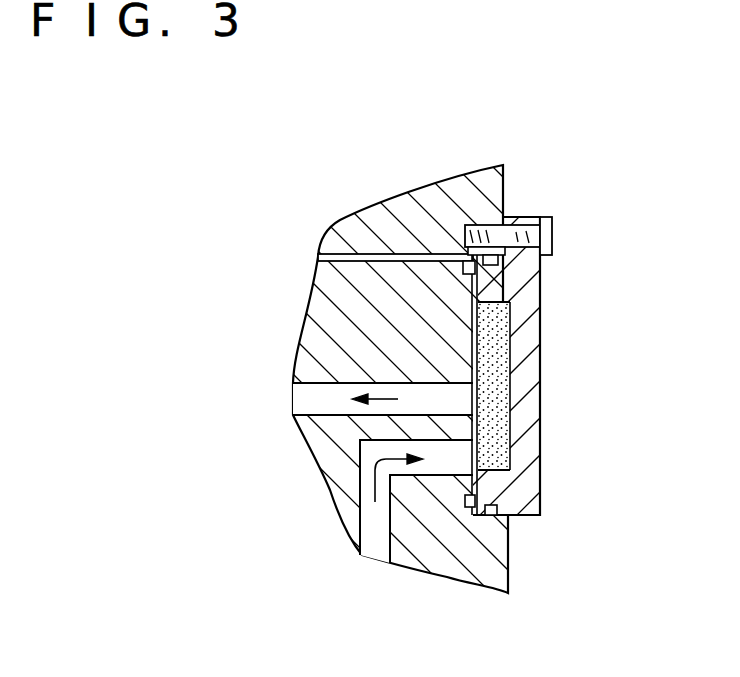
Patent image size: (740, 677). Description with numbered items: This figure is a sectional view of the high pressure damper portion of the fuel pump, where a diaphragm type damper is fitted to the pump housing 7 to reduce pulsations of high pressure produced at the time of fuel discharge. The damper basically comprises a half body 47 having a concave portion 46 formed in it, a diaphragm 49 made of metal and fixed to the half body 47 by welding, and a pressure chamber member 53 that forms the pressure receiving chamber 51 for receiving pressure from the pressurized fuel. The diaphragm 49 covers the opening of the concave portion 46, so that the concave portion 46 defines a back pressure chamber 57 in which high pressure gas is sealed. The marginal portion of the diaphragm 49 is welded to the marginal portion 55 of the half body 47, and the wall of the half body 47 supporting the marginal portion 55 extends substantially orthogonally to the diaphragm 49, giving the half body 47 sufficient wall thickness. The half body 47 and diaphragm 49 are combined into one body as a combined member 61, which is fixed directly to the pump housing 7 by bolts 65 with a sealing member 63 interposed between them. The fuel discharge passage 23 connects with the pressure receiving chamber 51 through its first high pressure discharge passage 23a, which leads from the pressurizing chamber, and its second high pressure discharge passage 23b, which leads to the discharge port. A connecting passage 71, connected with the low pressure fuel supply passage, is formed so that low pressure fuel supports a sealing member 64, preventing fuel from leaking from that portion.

The pump housing 7 is at (421, 196).
The connecting passage 71 is at (358, 255).
The pressure chamber member 53 is at (445, 272).
The bolts 65 is at (553, 237).
The marginal portion 55 is at (500, 266).
The sealing member 63 is at (478, 272).
The diaphragm 49 is at (485, 328).
The back pressure chamber 57 is at (493, 357).
The concave portion 46 is at (498, 388).
The pressure receiving chamber 51 is at (482, 413).
The half body 47 is at (528, 483).
The combined member 61 is at (536, 517).
The sealing member 64 is at (497, 520).
The fuel discharge passage 23 is at (309, 502).
The first high pressure discharge passage 23a is at (373, 516).
The second high pressure discharge passage 23b is at (305, 402).